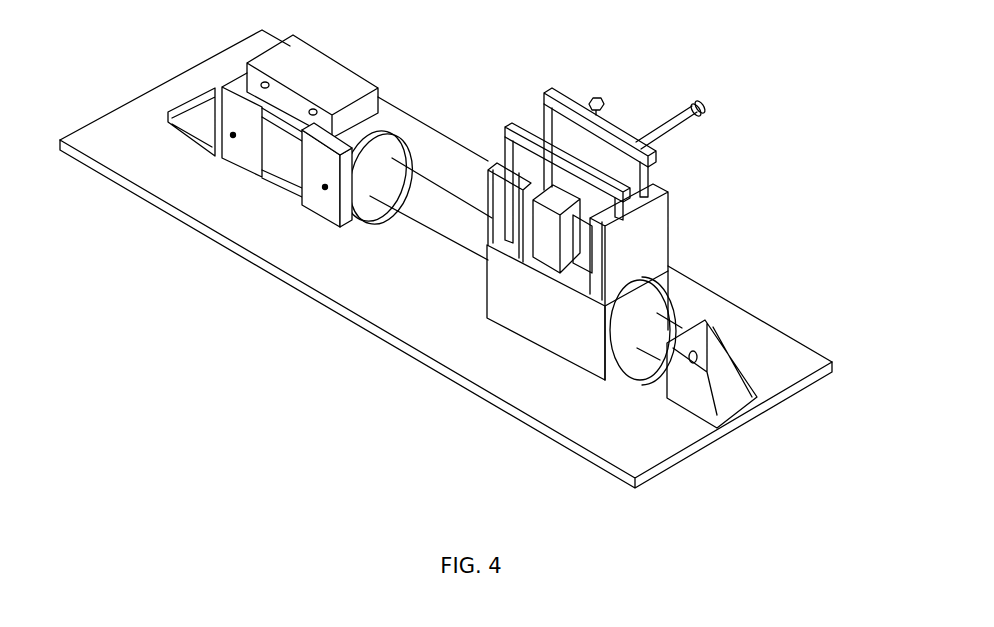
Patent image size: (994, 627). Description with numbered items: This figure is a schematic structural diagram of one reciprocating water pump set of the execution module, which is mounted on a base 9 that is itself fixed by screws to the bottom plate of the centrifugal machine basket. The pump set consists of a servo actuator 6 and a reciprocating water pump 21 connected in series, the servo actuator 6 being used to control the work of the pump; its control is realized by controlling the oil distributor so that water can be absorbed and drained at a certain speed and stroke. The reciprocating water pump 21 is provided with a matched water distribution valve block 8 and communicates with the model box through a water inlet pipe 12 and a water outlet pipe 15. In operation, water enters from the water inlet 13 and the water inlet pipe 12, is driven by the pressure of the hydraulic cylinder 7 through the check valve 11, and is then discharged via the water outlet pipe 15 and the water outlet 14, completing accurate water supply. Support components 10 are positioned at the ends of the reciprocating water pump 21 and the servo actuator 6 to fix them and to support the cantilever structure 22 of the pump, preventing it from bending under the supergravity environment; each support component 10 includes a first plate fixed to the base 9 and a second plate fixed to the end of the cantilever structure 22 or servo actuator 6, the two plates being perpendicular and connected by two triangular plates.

The servo actuator 6 is at (240, 152).
The hydraulic cylinder 7 is at (283, 167).
The water distribution valve block 8 is at (517, 315).
The base 9 is at (543, 382).
The support component 10 is at (760, 397).
The check valve 11 is at (507, 137).
The water inlet pipe 12 is at (552, 130).
The water inlet 13 is at (604, 101).
The water outlet 14 is at (704, 112).
The water outlet pipe 15 is at (677, 137).
The reciprocating water pump 21 is at (687, 230).
The cantilever structure 22 is at (658, 358).